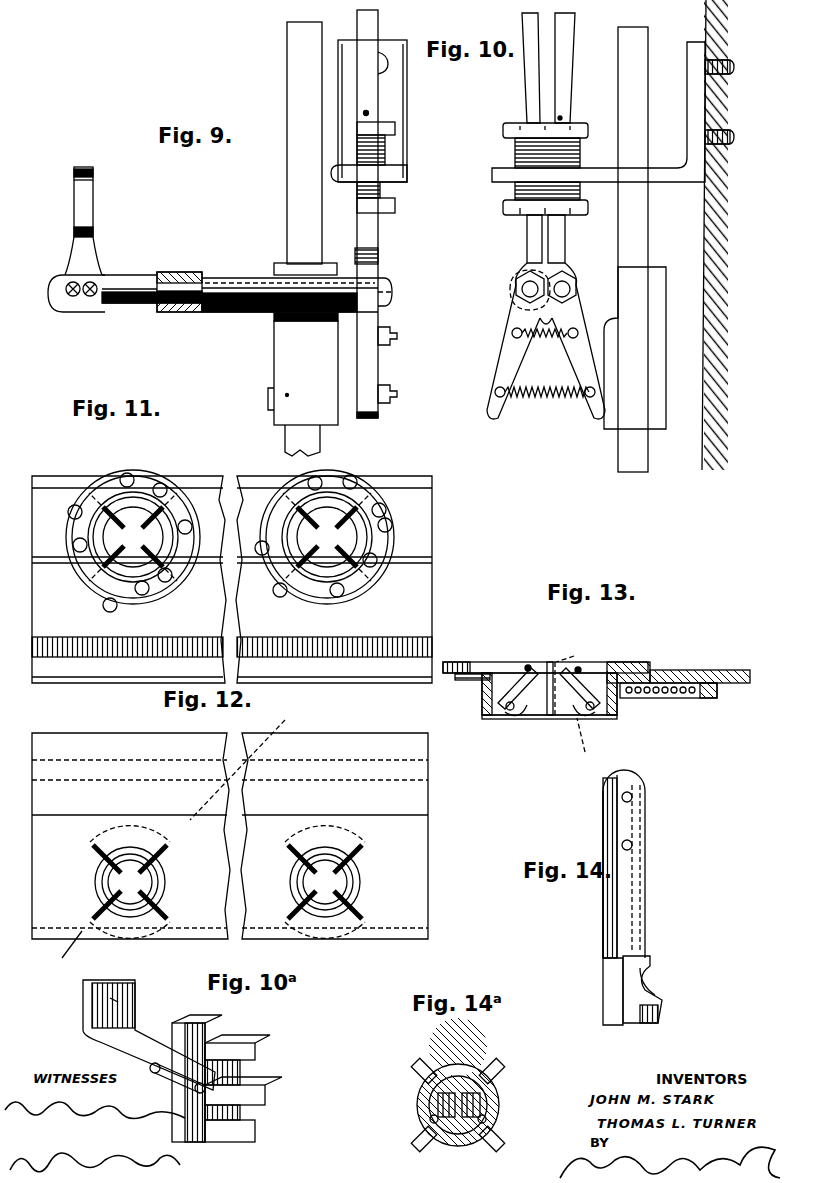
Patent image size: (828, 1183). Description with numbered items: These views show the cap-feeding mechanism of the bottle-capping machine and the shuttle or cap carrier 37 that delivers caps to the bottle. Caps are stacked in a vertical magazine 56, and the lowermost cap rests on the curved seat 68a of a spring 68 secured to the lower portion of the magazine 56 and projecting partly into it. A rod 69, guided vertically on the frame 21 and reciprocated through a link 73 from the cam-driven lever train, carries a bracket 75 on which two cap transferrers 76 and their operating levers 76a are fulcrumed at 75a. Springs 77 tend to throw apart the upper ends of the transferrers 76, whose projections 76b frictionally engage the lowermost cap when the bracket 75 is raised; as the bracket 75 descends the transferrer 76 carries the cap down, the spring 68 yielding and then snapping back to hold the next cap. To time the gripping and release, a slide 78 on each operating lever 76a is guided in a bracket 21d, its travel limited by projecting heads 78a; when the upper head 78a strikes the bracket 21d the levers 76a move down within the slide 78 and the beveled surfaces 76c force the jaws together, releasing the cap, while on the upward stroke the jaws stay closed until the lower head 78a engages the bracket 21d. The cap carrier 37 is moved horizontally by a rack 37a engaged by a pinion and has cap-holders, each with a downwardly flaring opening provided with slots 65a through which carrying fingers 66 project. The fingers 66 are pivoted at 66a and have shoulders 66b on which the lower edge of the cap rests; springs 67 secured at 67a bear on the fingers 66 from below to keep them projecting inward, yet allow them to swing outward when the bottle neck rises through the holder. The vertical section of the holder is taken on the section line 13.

In FIG. 12, the section line 13 is at (176, 841).
In FIG. 10, the frame 21 is at (702, 449).
In FIG. 9, the bracket 21d is at (407, 175).
In FIG. 10, the bracket 21d is at (676, 182).
In FIG. 10A, the bracket 21d is at (143, 1035).
In FIG. 11, the cap carrier slide 37 is at (432, 622).
In FIG. 12, the cap carrier slide 37 is at (428, 846).
In FIG. 13, the cap carrier slide 37 is at (692, 671).
In FIG. 12, the rack 37a is at (344, 781).
In FIG. 13, the rack 37a is at (678, 699).
In FIG. 14A, the magazine 56 is at (458, 1064).
In FIG. 12, the slots 65a is at (227, 895).
In FIG. 13, the slots 65a is at (569, 678).
In FIG. 11, the carrying fingers 66 is at (230, 537).
In FIG. 12, the carrying fingers 66 is at (227, 882).
In FIG. 13, the carrying fingers 66 is at (537, 719).
In FIG. 13, the finger pivots 66a is at (515, 708).
In FIG. 13, the shoulders 66b is at (528, 665).
In FIG. 11, the springs 67 is at (165, 484).
In FIG. 13, the springs 67 is at (506, 708).
In FIG. 11, the spring fastenings 67a is at (128, 473).
In FIG. 13, the spring fastenings 67a is at (585, 744).
In FIG. 14, the spring 68 is at (640, 885).
In FIG. 14A, the spring 68 is at (418, 1066).
In FIG. 14, the curved seat 68a is at (660, 972).
In FIG. 14A, the curved seat 68a is at (510, 1120).
In FIG. 9, the rod 69 is at (305, 148).
In FIG. 10, the rod 69 is at (648, 118).
In FIG. 10, the link 73 is at (576, 346).
In FIG. 9, the bracket 75 is at (303, 384).
In FIG. 9, the fulcrum 75a is at (180, 277).
In FIG. 10, the fulcrum 75a is at (514, 291).
In FIG. 9, the cap transferrer 76 is at (93, 197).
In FIG. 14A, the cap transferrer 76 is at (480, 1099).
In FIG. 9, the operating lever 76a is at (372, 22).
In FIG. 10, the operating lever 76a is at (530, 44).
In FIG. 9, the projection 76b is at (84, 168).
In FIG. 9, the beveled surface 76c is at (370, 114).
In FIG. 10, the beveled surface 76c is at (562, 118).
In FIG. 9, the spring 77 is at (390, 388).
In FIG. 10, the spring 77 is at (546, 390).
In FIG. 9, the slide 78 is at (382, 150).
In FIG. 10, the slide 78 is at (518, 192).
In FIG. 10A, the slide 78 is at (240, 1068).
In FIG. 9, the projecting heads 78a is at (395, 128).
In FIG. 10, the projecting heads 78a is at (512, 131).
In FIG. 10A, the projecting heads 78a is at (255, 1050).